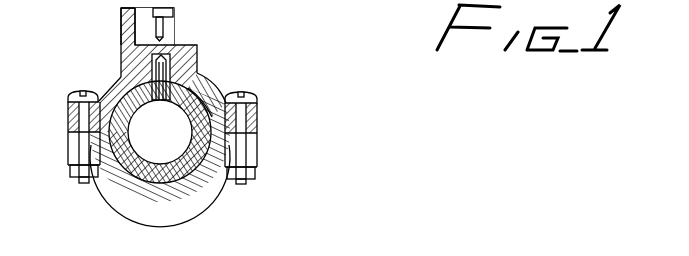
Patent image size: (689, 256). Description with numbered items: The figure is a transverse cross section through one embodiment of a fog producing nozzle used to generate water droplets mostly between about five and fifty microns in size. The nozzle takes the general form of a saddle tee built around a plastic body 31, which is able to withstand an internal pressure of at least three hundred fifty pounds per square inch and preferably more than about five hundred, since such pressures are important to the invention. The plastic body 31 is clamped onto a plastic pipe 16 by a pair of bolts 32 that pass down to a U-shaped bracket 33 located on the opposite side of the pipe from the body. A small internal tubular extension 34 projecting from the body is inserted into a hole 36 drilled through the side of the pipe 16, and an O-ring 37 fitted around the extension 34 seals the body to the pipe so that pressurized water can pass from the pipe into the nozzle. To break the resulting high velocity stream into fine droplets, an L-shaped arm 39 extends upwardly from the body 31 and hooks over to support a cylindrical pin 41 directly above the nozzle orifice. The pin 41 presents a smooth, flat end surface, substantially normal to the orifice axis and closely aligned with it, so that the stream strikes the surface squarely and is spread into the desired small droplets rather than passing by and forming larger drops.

The pipe 16 is at (128, 190).
The plastic body 31 is at (111, 81).
The bolts 32 is at (67, 142).
The U-shaped bracket 33 is at (177, 203).
The internal tubular extension 34 is at (203, 73).
The hole 36 is at (155, 110).
The O-ring 37 is at (198, 47).
The L-shaped arm 39 is at (121, 27).
The cylindrical pin 41 is at (170, 25).